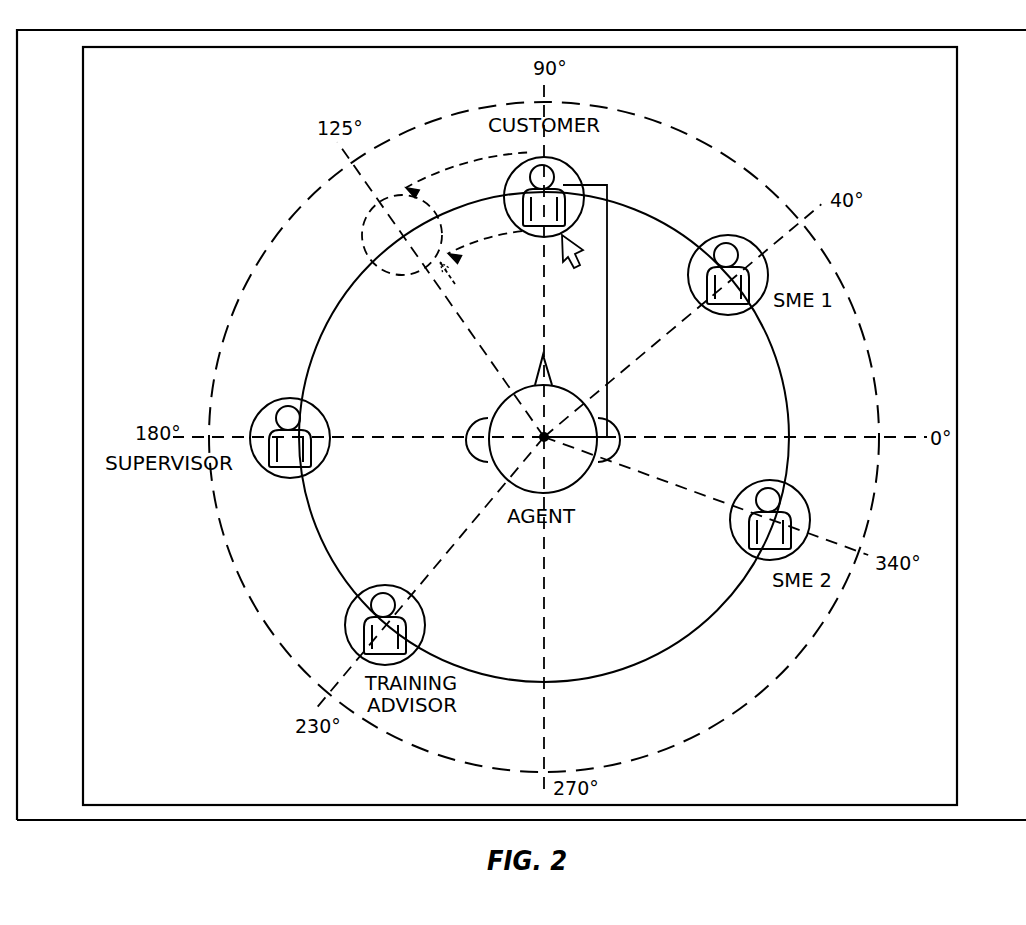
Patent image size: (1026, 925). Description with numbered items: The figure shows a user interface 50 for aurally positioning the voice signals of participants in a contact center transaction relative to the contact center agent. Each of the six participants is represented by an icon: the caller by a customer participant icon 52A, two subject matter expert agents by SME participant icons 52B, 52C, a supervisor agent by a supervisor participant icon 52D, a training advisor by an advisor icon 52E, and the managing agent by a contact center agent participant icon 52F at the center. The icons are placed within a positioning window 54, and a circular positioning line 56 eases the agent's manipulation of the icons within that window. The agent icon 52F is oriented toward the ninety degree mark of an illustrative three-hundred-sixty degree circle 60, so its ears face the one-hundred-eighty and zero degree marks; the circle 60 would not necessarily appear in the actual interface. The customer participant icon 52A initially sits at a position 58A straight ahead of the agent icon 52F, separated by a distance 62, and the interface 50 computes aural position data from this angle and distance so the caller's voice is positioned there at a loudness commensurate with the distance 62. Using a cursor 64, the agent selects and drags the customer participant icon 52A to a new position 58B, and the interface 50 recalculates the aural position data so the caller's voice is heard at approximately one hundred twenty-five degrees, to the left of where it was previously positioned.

The user interface 50 is at (1010, 82).
The positioning window 54 is at (153, 100).
The positioning line 56 is at (312, 355).
The position 58A is at (500, 169).
The position 58B is at (352, 250).
The 360 degree circle 60 is at (722, 148).
The distance 62 is at (607, 317).
The cursor 64 is at (573, 256).
The customer participant icon 52A is at (582, 175).
The SME participant icon 52B is at (758, 303).
The SME participant icon 52C is at (802, 493).
The supervisor participant icon 52D is at (323, 463).
The advisor icon 52E is at (347, 608).
The contact center agent participant icon 52F is at (580, 480).